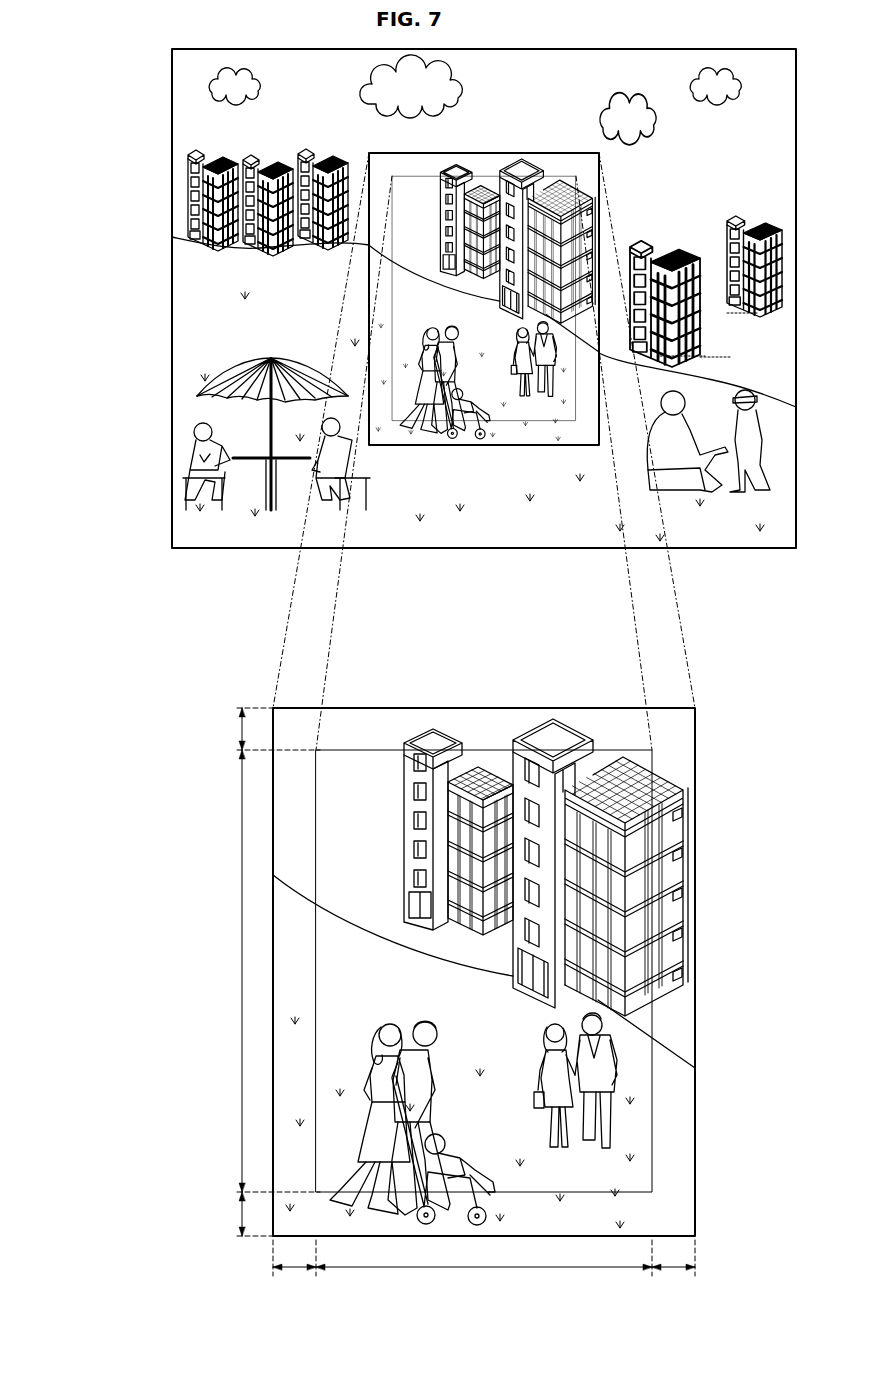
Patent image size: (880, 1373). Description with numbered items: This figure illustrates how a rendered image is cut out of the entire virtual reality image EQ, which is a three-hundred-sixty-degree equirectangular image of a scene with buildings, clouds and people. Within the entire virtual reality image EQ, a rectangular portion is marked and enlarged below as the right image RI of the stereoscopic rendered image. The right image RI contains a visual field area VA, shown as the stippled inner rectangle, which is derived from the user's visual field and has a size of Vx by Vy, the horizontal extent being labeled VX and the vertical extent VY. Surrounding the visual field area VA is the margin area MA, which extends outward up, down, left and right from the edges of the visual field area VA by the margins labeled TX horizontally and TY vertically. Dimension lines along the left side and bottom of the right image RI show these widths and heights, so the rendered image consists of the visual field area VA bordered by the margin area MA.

The entire virtual reality image EQ is at (135, 266).
The right image RI is at (406, 972).
The margin area MA is at (680, 1026).
The visual field area VA is at (633, 1088).
The horizontal margin TX is at (484, 1273).
The vertical margin TY is at (265, 972).
The visual field area width VX is at (484, 857).
The visual field area height VY is at (305, 732).